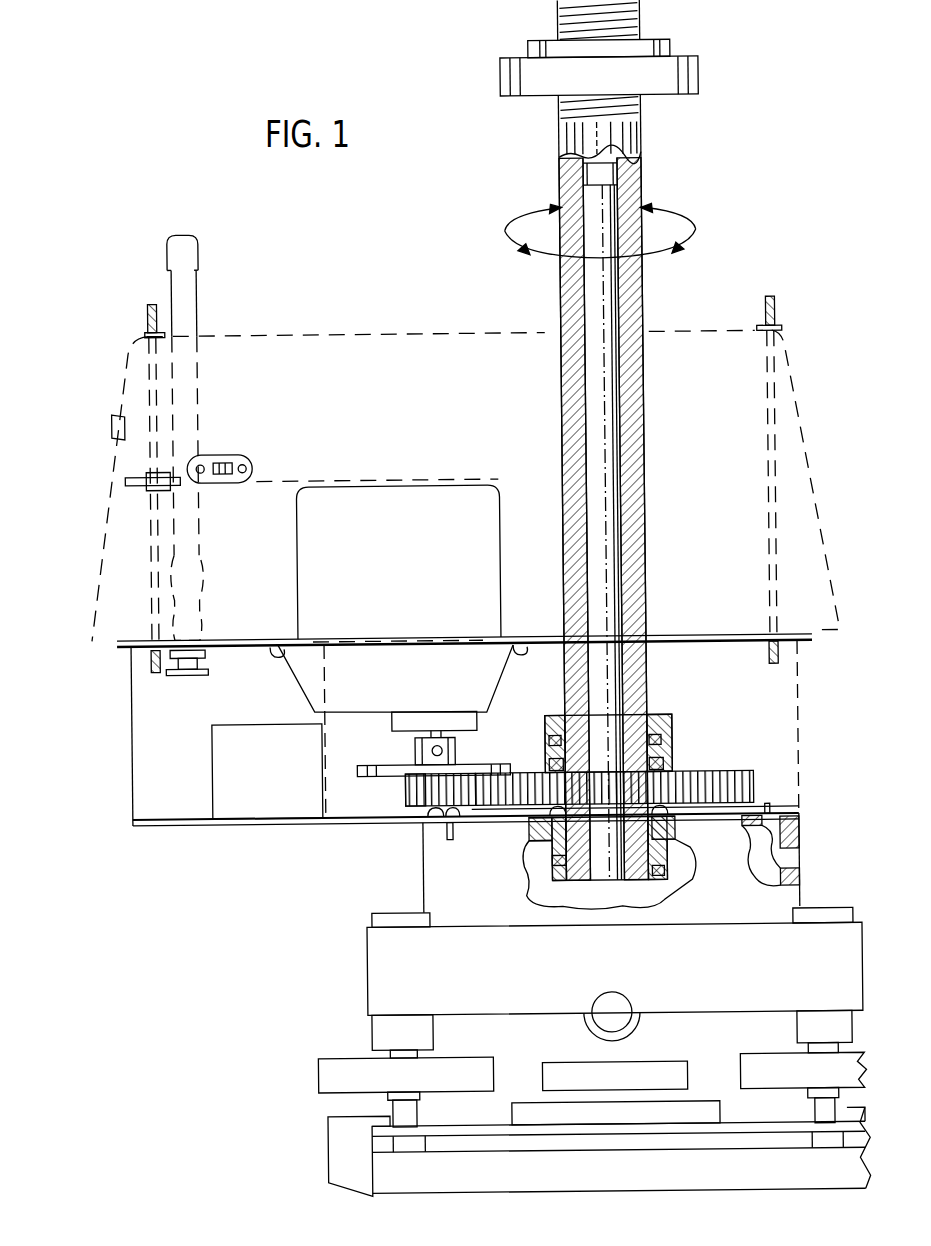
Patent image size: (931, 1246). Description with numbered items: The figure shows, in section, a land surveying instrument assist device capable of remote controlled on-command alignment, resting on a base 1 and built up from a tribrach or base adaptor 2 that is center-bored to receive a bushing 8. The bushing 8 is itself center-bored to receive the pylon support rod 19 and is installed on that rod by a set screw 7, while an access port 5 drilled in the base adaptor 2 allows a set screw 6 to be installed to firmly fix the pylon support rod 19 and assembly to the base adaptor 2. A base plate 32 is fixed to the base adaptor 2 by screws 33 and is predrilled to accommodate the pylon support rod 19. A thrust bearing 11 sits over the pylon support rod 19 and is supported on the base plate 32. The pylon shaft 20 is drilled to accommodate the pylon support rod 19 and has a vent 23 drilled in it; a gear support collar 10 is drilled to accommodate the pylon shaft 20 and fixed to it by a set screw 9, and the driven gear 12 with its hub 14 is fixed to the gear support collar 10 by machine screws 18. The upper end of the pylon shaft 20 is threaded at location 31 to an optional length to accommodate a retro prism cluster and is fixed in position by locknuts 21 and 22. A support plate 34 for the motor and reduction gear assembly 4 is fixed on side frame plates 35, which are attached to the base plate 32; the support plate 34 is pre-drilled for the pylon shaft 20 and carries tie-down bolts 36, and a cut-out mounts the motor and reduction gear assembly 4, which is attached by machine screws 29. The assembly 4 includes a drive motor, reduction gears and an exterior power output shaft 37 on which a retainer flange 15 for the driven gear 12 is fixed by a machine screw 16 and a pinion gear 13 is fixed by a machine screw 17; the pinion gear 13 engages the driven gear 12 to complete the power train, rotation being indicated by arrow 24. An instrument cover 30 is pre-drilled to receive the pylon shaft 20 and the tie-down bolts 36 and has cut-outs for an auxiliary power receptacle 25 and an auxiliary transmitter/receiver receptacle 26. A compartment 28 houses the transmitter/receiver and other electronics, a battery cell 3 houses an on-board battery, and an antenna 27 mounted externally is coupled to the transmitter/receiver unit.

The machine base 1 is at (524, 971).
The tribrach 2 is at (467, 908).
The battery cell 3 is at (258, 776).
The motor and reduction gear assembly 4 is at (392, 536).
The access port 5 is at (796, 868).
The set screw 6 is at (665, 868).
The set screw 7 is at (560, 862).
The bushing 8 is at (609, 874).
The set screw 9 is at (662, 740).
The gear support collar 10 is at (664, 722).
The thrust bearing 11 is at (635, 807).
The driven gear 12 is at (748, 780).
The pinion gear 13 is at (404, 800).
The gear hub 14 is at (406, 778).
The retainer flange 15 is at (498, 762).
The machine screw 16 is at (416, 747).
The machine screw 17 is at (428, 818).
The machine screws 18 is at (664, 762).
The pylon support rod 19 is at (592, 305).
The pylon shaft 20 is at (646, 150).
The locknut 21 is at (704, 76).
The locknut 22 is at (666, 44).
The vent 23 is at (622, 170).
The arrow 24 is at (692, 218).
The auxiliary power receptacle 25 is at (254, 456).
The auxiliary transmitter/receiver receptacle 26 is at (120, 434).
The antenna 27 is at (200, 306).
The compartment 28 is at (359, 407).
The machine screws 29 is at (278, 640).
The instrument cover 30 is at (376, 331).
The threaded location 31 is at (558, 26).
The base plate 32 is at (288, 822).
The screws 33 is at (452, 828).
The support plate 34 is at (740, 634).
The side frame plates 35 is at (328, 696).
The tie-down bolts 36 is at (151, 320).
The power output shaft 37 is at (442, 748).